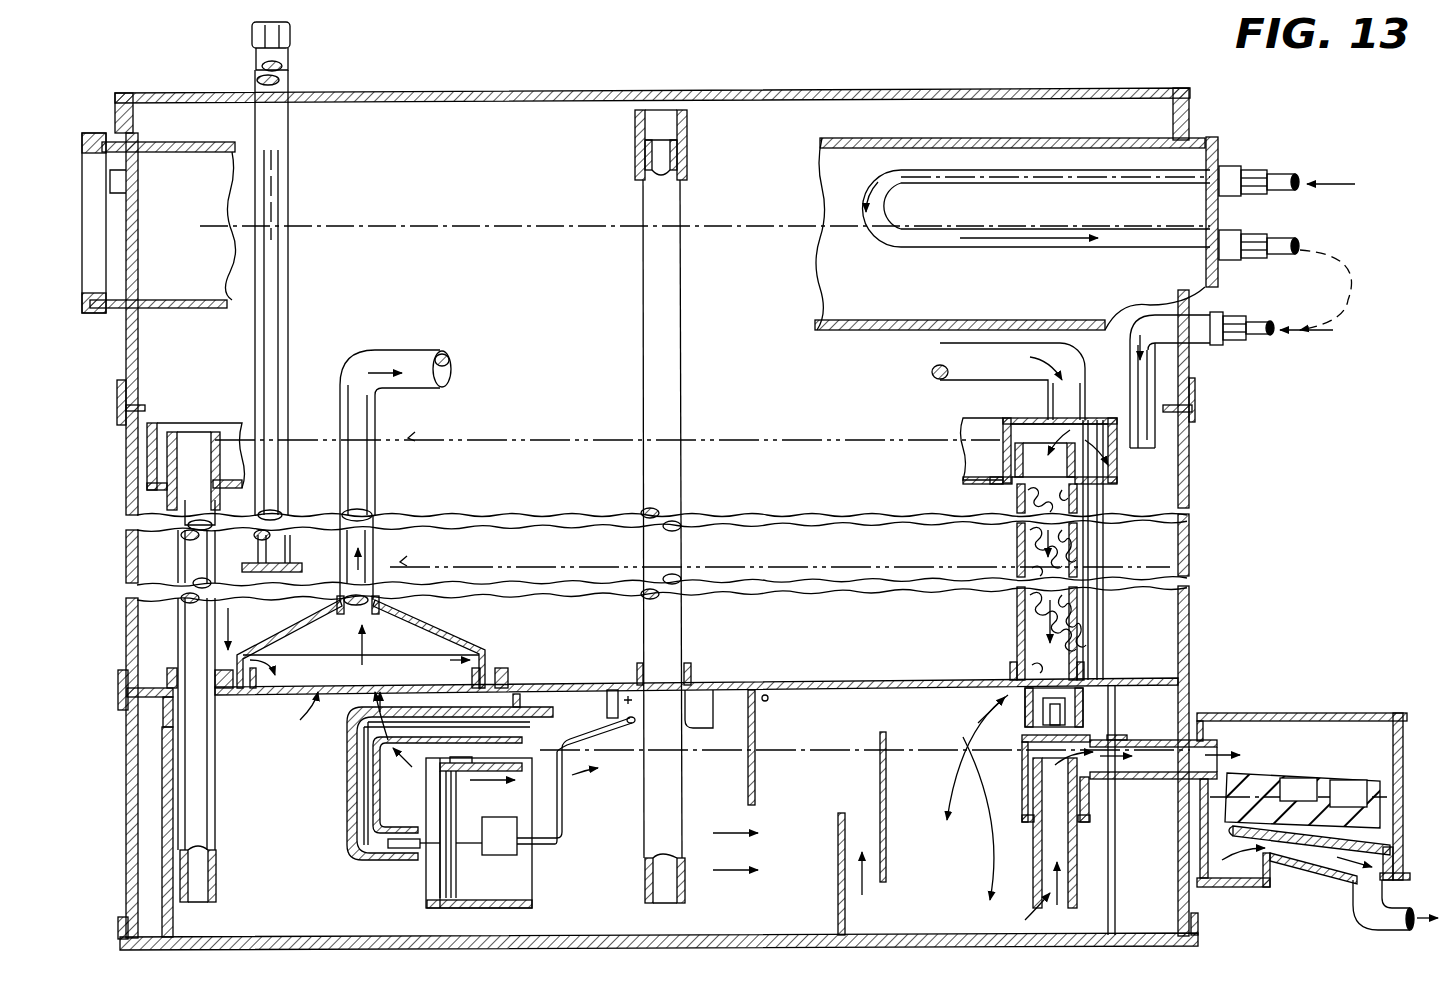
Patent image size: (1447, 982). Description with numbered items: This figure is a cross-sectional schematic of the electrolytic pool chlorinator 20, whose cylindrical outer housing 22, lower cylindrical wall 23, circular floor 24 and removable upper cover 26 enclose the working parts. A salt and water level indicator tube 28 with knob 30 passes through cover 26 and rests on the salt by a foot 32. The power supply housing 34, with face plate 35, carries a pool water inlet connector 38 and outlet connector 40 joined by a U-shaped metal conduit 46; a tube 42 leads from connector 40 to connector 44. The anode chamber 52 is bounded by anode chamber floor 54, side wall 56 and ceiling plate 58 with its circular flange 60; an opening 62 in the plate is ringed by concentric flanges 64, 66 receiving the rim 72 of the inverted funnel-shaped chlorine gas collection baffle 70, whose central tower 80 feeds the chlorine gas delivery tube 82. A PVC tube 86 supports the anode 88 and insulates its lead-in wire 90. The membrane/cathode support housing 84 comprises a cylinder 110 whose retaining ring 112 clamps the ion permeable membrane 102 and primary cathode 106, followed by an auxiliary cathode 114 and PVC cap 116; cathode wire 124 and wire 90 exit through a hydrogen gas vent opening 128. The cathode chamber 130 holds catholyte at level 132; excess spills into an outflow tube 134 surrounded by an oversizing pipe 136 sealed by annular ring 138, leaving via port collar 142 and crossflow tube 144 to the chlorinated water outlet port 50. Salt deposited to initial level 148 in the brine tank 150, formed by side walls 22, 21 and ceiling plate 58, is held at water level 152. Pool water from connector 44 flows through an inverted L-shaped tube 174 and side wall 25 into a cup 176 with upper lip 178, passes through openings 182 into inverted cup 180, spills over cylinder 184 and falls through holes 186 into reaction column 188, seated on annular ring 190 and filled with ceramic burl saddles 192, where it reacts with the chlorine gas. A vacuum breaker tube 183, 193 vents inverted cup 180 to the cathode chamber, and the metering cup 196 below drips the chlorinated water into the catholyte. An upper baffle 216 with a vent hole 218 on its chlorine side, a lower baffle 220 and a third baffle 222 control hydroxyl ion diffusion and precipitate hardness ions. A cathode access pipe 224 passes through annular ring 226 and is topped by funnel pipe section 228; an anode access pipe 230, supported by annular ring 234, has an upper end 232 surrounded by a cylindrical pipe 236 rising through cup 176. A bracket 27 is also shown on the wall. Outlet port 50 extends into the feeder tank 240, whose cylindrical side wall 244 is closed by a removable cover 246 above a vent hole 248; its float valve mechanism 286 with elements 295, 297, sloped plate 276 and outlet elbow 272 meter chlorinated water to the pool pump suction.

The electrolytic pool chlorinator 20 is at (1192, 605).
The cylindrical side wall 21 is at (1185, 342).
The cylindrical outer housing 22 is at (1190, 548).
The lower cylindrical wall 23 is at (1197, 712).
The circular floor 24 is at (700, 935).
The cylindrical side wall 25 is at (1192, 660).
The removable upper cover 26 is at (548, 97).
The bracket 27 is at (1196, 408).
The salt and water level indicator tube 28 is at (290, 86).
The enlarged knob 30 is at (290, 40).
The foot 32 is at (298, 560).
The electrical power supply housing 34 is at (1200, 137).
The flange 35 is at (1222, 212).
The pool water inlet connector 38 is at (1248, 170).
The connector 40 is at (1265, 235).
The tube 42 is at (1300, 246).
The connector 44 is at (1240, 345).
The U-shaped metal conduit 46 is at (1010, 180).
The chlorinated water outlet port 50 is at (1222, 720).
The anode chamber 52 is at (277, 829).
The floor 54 is at (265, 935).
The cylindrical anode chamber side wall 56 is at (162, 762).
The upper ceiling plate 58 is at (575, 685).
The circular flange 60 is at (140, 722).
The opening 62 is at (308, 712).
The concentric flange 64 is at (258, 684).
The concentric flange 66 is at (510, 648).
The chlorine gas collection baffle 70 is at (440, 624).
The downwardly-turned rim 72 is at (488, 660).
The central tower 80 is at (335, 608).
The chlorine gas delivery tube 82 is at (378, 492).
The membrane/cathode support housing 84 is at (418, 914).
The PVC tube 86 is at (350, 760).
The anode 88 is at (440, 815).
The lead-in wire 90 is at (607, 716).
The ion permeable selective membrane 102 is at (440, 775).
The primary cathode plate 106 is at (465, 892).
The cylinder 110 is at (532, 895).
The retaining ring 112 is at (458, 760).
The auxiliary cathode 114 is at (464, 810).
The PVC cap 116 is at (518, 840).
The insulated wire 124 is at (572, 795).
The hydrogen gas vent opening 128 is at (700, 712).
The cathode chamber 130 is at (761, 864).
The catholyte level 132 is at (812, 750).
The outflow tube 134 is at (1033, 845).
The oversizing pipe 136 is at (1022, 782).
The annular ring 138 is at (1022, 810).
The port collar 142 is at (1120, 730).
The crossflow tube 144 is at (1170, 779).
The initial salt level 148 is at (758, 567).
The brine tank 150 is at (768, 479).
The water level 152 is at (752, 440).
The inverted L-shaped tube 174 is at (1150, 432).
The cup 176 is at (160, 478).
The upper lip 178 is at (205, 435).
The inverted cup 180 is at (1078, 412).
The openings 182 is at (1000, 470).
The vacuum breaker tube 183 is at (1105, 548).
The vertically-oriented cylinder 184 is at (1041, 461).
The holes 186 is at (1003, 488).
The reaction column 188 is at (1017, 550).
The annular ring 190 is at (1012, 670).
The ceramic burl saddles 192 is at (1085, 620).
The vacuum breaker tube 193 is at (1092, 652).
The metering cup 196 is at (985, 696).
The upper baffle 216 is at (756, 725).
The vent hole 218 is at (768, 690).
The lower baffle 220 is at (848, 918).
The third baffle 222 is at (888, 865).
The cathode access pipe 224 is at (683, 335).
The annular ring 226 is at (688, 660).
The larger diameter pipe section 228 is at (688, 145).
The anode access pipe 230 is at (178, 628).
The upper end 232 is at (190, 470).
The annular ring 234 is at (170, 683).
The cylindrical pipe 236 is at (160, 457).
The feeder tank 240 is at (1405, 764).
The cylindrical side wall 244 is at (1403, 827).
The removable cover 246 is at (1310, 713).
The vent hole 248 is at (1403, 732).
The drain elbow 272 is at (1360, 905).
The drain plate 276 is at (1330, 870).
The filter block 286 is at (1262, 773).
The filter element 295 is at (1300, 778).
The filter element 297 is at (1350, 782).